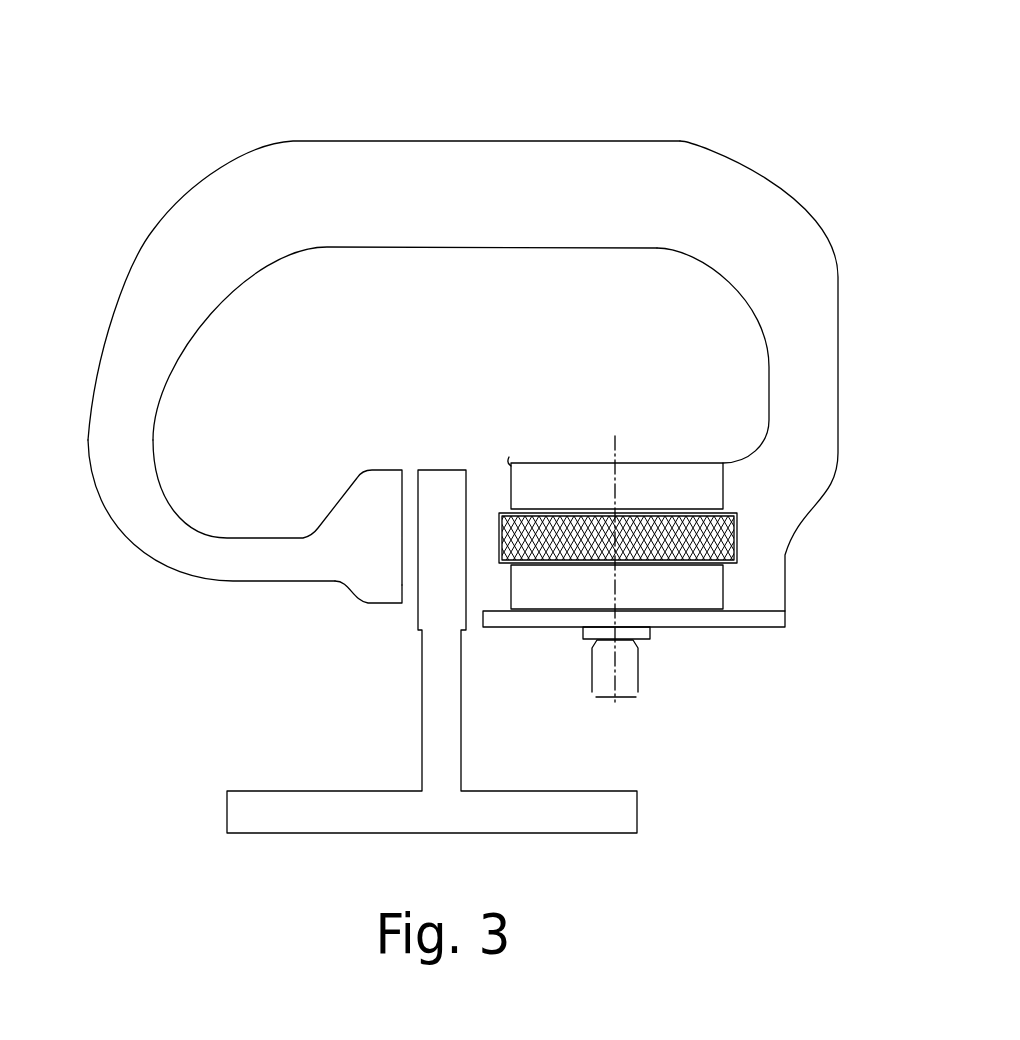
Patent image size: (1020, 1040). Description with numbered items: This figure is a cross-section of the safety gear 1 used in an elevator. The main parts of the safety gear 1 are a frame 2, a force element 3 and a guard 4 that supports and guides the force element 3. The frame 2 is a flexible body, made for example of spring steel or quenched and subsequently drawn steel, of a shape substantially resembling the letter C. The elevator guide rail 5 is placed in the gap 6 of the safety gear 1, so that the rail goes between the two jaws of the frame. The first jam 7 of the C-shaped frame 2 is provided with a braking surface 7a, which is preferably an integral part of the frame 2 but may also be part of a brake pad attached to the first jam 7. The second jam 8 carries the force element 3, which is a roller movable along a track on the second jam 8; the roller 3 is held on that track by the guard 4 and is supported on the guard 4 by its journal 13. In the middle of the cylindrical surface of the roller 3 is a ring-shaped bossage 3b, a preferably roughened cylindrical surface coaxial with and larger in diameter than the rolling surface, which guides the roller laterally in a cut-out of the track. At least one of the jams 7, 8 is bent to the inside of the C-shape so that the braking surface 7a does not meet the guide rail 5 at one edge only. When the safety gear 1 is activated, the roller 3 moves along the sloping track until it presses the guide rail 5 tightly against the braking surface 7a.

The safety gear 1 is at (228, 106).
The frame 2 is at (173, 257).
The force element 3 is at (535, 492).
The bossage 3b is at (636, 528).
The guard 4 is at (720, 624).
The elevator guide rail 5 is at (440, 738).
The gap 6 is at (456, 426).
The first jam 7 is at (238, 565).
The braking surface 7a is at (402, 580).
The second jam 8 is at (798, 455).
The journal 13 is at (628, 670).